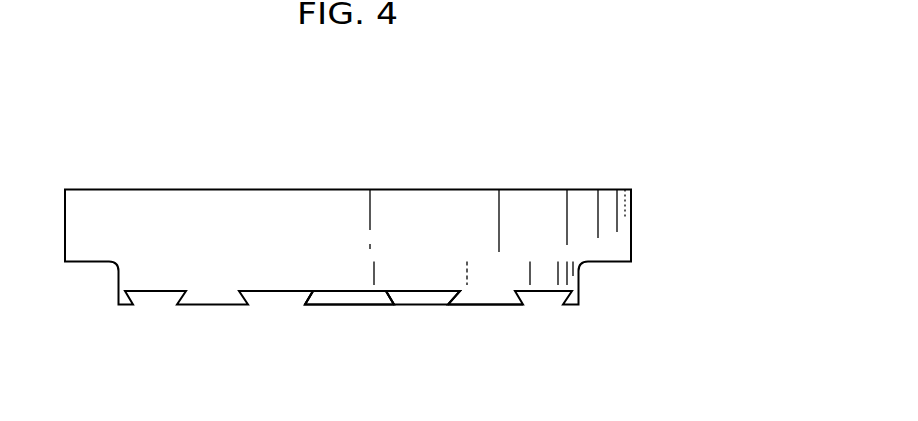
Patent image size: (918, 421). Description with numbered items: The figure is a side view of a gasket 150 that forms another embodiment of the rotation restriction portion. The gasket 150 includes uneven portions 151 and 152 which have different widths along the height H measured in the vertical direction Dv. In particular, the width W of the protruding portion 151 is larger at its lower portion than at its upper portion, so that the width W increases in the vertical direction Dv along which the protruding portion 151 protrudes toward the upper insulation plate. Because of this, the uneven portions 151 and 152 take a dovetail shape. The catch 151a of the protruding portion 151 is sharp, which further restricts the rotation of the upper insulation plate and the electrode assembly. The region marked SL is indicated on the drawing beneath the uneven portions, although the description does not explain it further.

The gasket 150 is at (340, 397).
The protruding portion 151 is at (350, 304).
The uneven portion 152 is at (418, 291).
The catch 151a is at (299, 307).
The bottom surface region SL is at (495, 317).
The width W is at (182, 297).
The height H is at (273, 327).
The vertical direction Dv is at (675, 165).